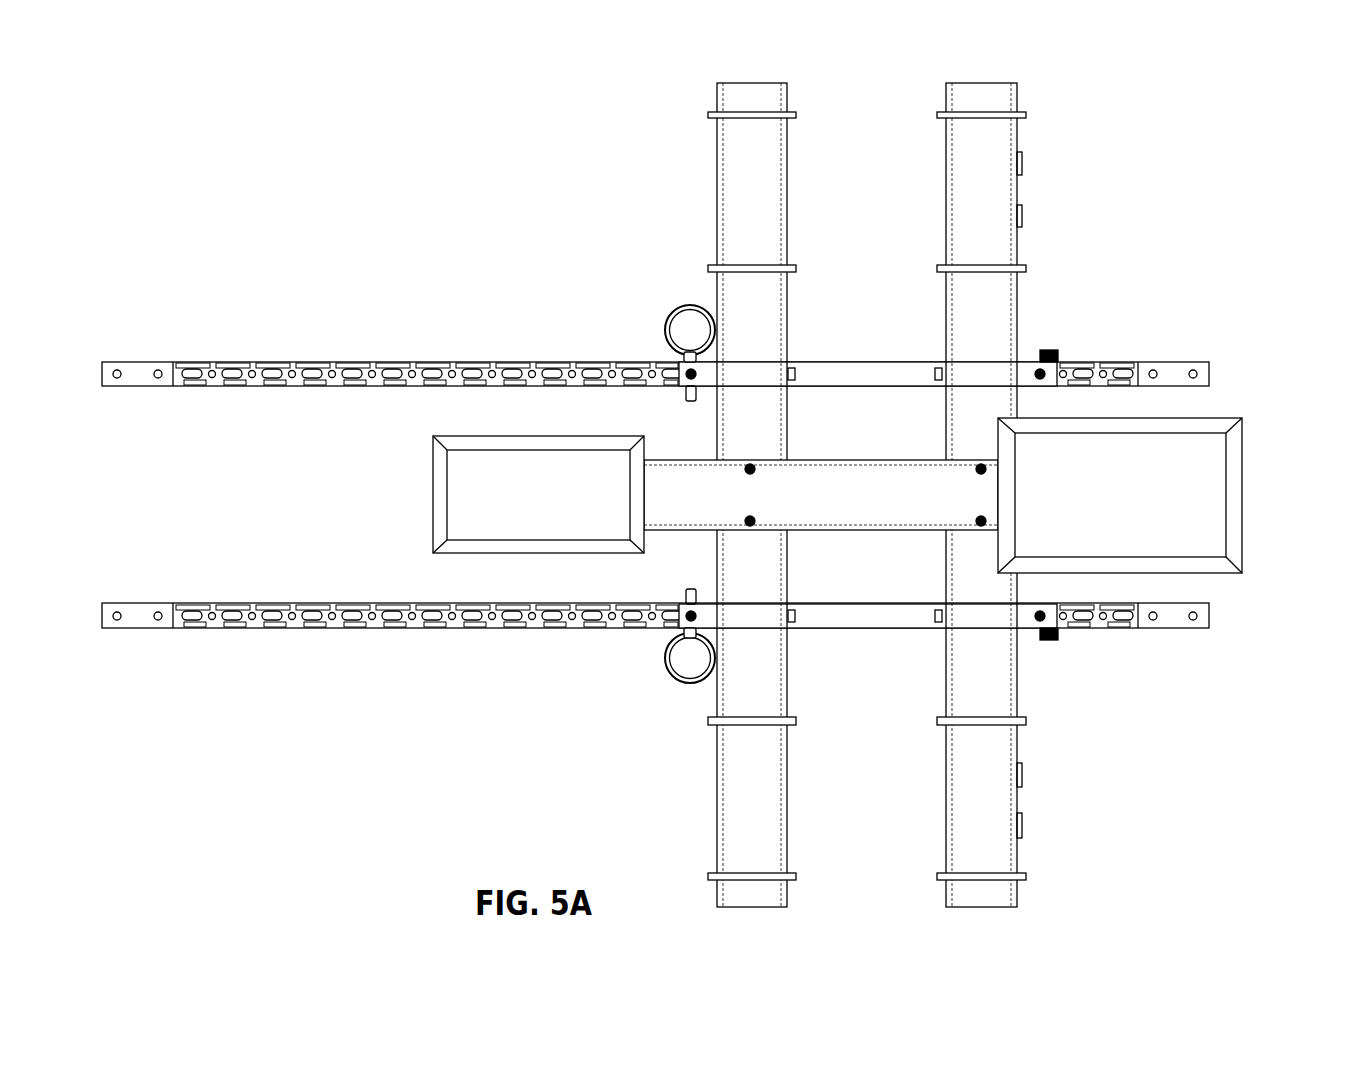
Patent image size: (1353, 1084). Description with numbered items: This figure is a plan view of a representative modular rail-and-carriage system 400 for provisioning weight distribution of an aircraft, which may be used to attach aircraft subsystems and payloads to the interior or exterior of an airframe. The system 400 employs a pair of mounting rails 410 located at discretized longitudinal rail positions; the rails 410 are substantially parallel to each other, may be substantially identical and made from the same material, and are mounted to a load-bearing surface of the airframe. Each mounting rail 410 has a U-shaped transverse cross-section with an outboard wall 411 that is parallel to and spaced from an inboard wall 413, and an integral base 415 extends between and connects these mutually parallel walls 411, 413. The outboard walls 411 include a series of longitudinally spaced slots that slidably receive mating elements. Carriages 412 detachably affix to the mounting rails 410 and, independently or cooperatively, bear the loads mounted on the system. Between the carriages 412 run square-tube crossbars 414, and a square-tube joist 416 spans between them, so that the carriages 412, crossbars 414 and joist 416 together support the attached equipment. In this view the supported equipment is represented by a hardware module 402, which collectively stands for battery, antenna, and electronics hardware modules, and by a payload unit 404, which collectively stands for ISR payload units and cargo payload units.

The modular rail-and-carriage system 400 is at (205, 128).
The hardware module 402 is at (432, 490).
The payload unit 404 is at (1243, 433).
The mounting rail 410 is at (641, 484).
The outboard wall 411 is at (360, 360).
The carriage 412 is at (850, 360).
The inboard wall 413 is at (362, 388).
The square-tube crossbar 414 is at (712, 188).
The integral base 415 is at (147, 392).
The square-tube joist 416 is at (850, 458).